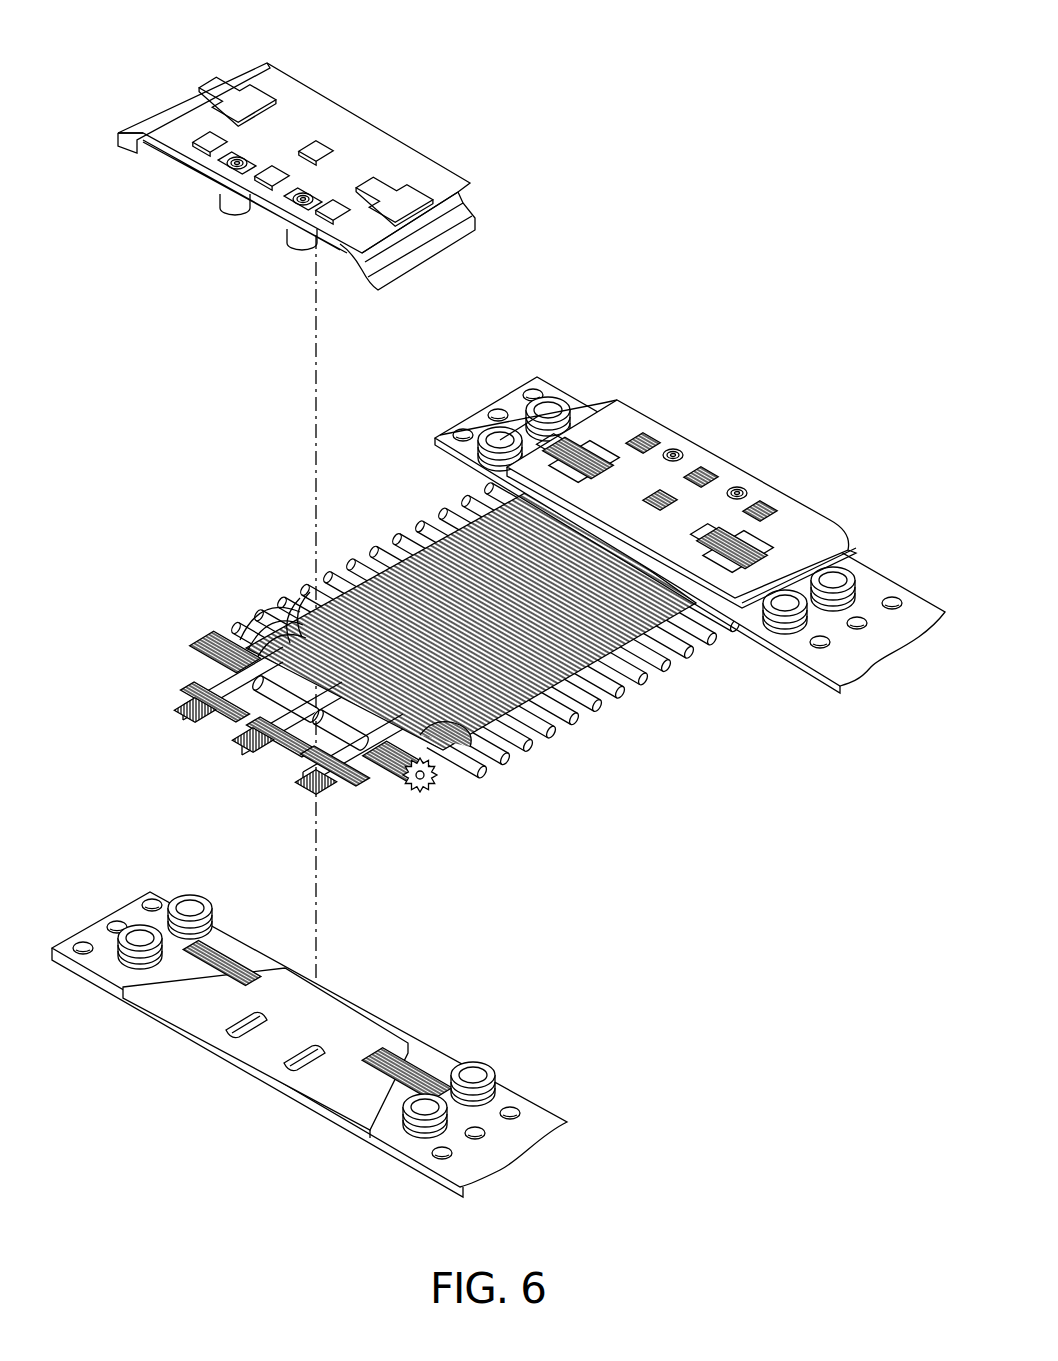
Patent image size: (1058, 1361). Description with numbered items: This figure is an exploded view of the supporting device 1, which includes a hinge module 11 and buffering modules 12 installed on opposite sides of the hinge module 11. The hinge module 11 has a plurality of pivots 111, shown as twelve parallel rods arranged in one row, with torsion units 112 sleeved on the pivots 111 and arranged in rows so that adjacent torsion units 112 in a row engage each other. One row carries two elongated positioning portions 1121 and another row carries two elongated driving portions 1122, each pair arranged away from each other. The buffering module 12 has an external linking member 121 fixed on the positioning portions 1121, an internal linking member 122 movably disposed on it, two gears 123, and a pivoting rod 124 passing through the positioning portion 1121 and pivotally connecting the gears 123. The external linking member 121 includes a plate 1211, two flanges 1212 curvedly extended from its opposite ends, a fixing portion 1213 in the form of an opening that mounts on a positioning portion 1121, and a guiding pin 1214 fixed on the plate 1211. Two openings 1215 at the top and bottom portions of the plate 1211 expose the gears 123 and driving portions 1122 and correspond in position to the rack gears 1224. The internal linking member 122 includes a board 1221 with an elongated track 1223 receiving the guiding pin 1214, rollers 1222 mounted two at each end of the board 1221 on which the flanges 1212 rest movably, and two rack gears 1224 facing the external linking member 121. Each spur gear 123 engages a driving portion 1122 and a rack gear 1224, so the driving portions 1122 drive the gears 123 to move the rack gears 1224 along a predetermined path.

The supporting device 1 is at (930, 43).
The hinge module 11 is at (403, 530).
The pivots 111 is at (500, 770).
The torsion units 112 is at (293, 598).
The positioning portions 1121 is at (635, 440).
The driving portions 1122 is at (455, 752).
The buffering module 12 is at (738, 452).
The external linking member 121 is at (420, 150).
The plate 1211 is at (372, 148).
The flanges 1212 is at (415, 252).
The fixing portion 1213 is at (307, 145).
The guiding pin 1214 is at (296, 237).
The openings 1215 is at (224, 110).
The internal linking member 122 is at (100, 915).
The board 1221 is at (350, 1030).
The rollers 1222 is at (188, 906).
The track 1223 is at (298, 1064).
The rack gears 1224 is at (208, 965).
The gears 123 is at (207, 643).
The pivoting rod 124 is at (283, 690).